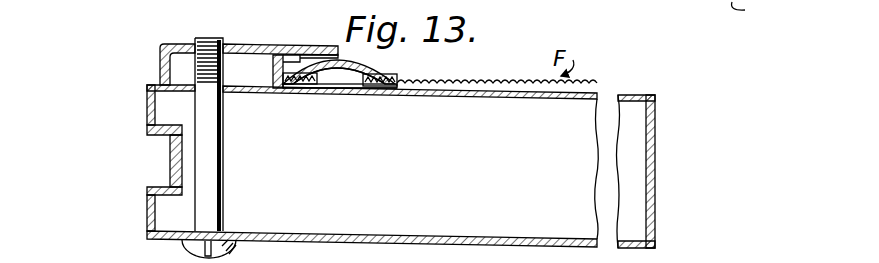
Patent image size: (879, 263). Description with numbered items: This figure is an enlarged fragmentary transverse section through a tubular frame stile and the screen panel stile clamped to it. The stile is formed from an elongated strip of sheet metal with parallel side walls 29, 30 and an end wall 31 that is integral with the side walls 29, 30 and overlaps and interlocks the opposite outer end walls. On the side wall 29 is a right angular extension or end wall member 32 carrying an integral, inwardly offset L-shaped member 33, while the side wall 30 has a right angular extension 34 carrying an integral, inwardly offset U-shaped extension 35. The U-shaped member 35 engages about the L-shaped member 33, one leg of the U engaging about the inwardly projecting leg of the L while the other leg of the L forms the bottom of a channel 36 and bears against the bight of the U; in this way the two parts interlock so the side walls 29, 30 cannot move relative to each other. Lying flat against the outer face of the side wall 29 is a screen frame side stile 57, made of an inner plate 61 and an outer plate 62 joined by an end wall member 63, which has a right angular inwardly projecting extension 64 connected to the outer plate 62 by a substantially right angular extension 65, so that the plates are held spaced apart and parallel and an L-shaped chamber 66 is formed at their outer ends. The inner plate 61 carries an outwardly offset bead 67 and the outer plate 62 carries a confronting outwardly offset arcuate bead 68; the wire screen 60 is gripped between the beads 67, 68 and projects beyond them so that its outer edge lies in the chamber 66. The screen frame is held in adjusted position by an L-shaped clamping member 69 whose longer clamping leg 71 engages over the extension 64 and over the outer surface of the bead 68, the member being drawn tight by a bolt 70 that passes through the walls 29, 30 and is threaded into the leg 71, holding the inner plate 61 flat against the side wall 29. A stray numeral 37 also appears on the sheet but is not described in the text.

The side wall 29 is at (459, 97).
The side wall 30 is at (441, 238).
The end wall 31 is at (643, 170).
The end wall member 32 is at (147, 112).
The L-shaped member 33 is at (160, 136).
The right angular extension 34 is at (147, 213).
The U-shaped extension 35 is at (157, 196).
The channel 36 is at (164, 165).
The housing 37 is at (753, 11).
The side stile 57 is at (400, 96).
The wire screen 60 is at (464, 80).
The inner plate 61 is at (397, 90).
The outer plate 62 is at (395, 75).
The end wall member 63 is at (297, 60).
The inwardly projecting extension 64 is at (279, 56).
The right angular extension 65 is at (304, 46).
The L-shaped chamber 66 is at (284, 86).
The outwardly offset bead 67 is at (350, 92).
The arcuate bead 68 is at (333, 62).
The L-shaped clamping member 69 is at (200, 25).
The bolt 70 is at (223, 163).
The clamping leg 71 is at (237, 45).